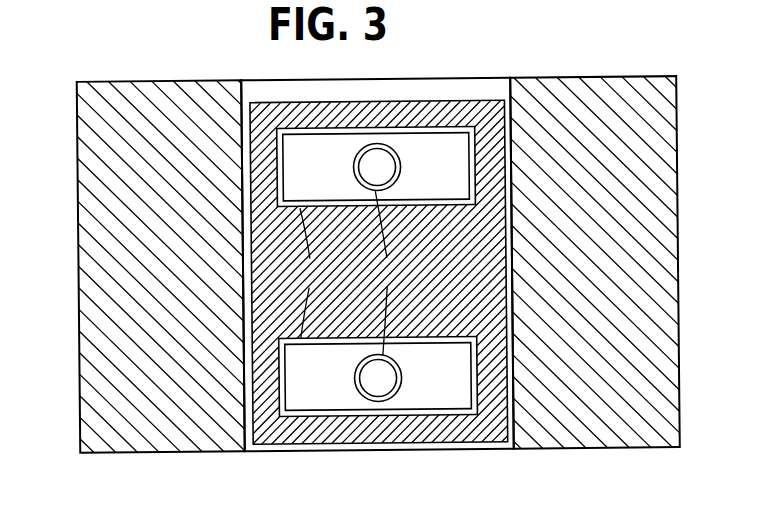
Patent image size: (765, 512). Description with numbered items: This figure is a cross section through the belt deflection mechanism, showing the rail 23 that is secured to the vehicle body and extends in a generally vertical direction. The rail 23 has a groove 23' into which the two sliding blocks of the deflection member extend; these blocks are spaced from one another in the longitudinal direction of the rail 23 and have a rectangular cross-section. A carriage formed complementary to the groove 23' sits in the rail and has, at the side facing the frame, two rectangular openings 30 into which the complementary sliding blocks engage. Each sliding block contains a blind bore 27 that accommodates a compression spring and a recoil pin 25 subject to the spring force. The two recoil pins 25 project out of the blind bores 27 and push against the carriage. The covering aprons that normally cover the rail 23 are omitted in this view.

The rail 23 is at (355, 264).
The groove 23' is at (377, 248).
The recoil pin 25 is at (371, 157).
The blind bore 27 is at (389, 273).
The rectangular opening 30 is at (303, 273).